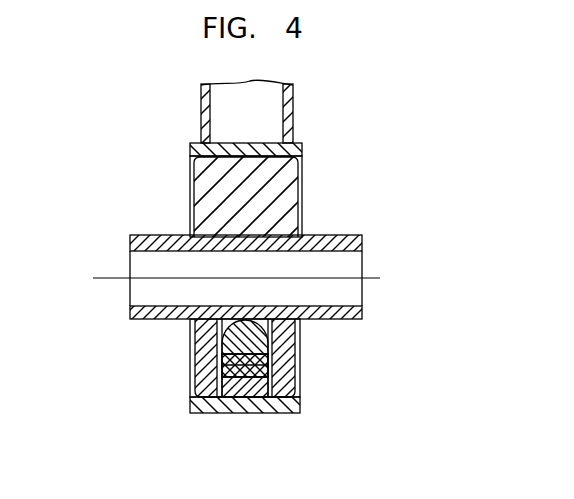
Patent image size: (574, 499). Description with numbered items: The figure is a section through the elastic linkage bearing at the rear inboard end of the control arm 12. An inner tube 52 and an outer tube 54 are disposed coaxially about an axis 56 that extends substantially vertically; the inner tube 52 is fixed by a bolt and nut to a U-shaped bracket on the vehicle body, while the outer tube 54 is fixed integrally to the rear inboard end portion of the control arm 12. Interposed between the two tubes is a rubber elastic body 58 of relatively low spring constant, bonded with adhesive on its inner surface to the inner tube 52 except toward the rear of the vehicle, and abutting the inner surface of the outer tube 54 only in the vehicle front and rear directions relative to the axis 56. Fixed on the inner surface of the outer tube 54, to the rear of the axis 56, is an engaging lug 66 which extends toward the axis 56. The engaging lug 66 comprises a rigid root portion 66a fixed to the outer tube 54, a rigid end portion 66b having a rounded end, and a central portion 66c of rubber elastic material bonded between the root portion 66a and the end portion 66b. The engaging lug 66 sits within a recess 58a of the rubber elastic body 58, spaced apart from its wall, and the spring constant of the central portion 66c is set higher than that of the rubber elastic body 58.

The control arm 12 is at (201, 128).
The inner tube 52 is at (339, 236).
The outer tube 54 is at (300, 151).
The axis 56 is at (116, 276).
The rubber elastic body 58 is at (196, 183).
The recess 58a is at (272, 334).
The engaging lug 66 is at (270, 366).
The root portion 66a is at (237, 385).
The end portion 66b is at (233, 335).
The central portion 66c is at (232, 368).